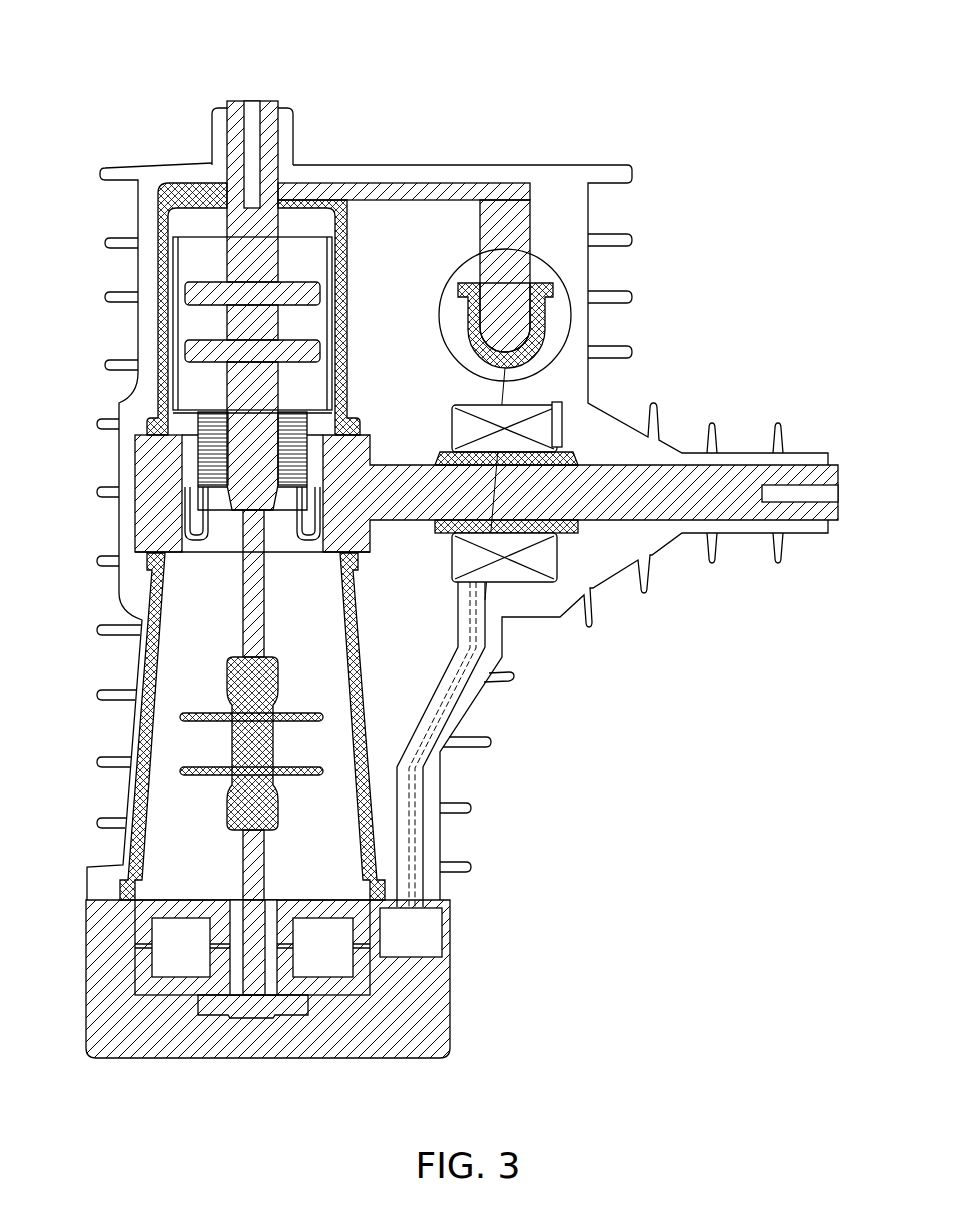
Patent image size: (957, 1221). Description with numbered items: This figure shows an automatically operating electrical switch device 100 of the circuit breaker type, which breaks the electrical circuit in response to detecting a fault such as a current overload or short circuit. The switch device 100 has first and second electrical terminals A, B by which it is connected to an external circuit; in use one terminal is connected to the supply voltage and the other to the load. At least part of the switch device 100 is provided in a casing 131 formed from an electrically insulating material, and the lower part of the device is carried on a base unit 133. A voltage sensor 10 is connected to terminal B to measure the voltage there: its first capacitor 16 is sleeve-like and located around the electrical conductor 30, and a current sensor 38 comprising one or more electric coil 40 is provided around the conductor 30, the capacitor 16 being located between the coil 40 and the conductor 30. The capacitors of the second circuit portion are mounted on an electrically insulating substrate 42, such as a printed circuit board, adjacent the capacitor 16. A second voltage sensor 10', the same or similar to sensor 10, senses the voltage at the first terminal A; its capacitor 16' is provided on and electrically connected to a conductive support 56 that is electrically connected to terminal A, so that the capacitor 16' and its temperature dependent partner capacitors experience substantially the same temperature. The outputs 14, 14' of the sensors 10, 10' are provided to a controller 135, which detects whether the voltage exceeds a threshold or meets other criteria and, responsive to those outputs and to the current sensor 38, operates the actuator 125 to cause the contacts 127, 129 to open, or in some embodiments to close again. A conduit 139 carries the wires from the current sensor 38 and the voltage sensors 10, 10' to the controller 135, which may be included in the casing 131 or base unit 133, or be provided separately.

The switch device 100 is at (663, 61).
The first electrical terminal A is at (280, 103).
The conductive support 56 is at (520, 222).
The casing 131 is at (572, 213).
The contact 127 is at (195, 292).
The contact 129 is at (195, 358).
The capacitor 16' is at (564, 315).
The output 14' is at (465, 406).
The voltage sensor 10' is at (550, 397).
The electrically insulating substrate 42 is at (562, 417).
The voltage sensor 10 is at (595, 424).
The second electrical terminal B is at (820, 477).
The electrical conductor 30 is at (573, 498).
The first capacitor 16 is at (475, 554).
The output 14 is at (468, 577).
The electric coil 40 is at (523, 584).
The current sensor 38 is at (522, 586).
The conduit 139 is at (423, 790).
The actuator 125 is at (176, 898).
The controller 135 is at (392, 946).
The base unit 133 is at (405, 1005).